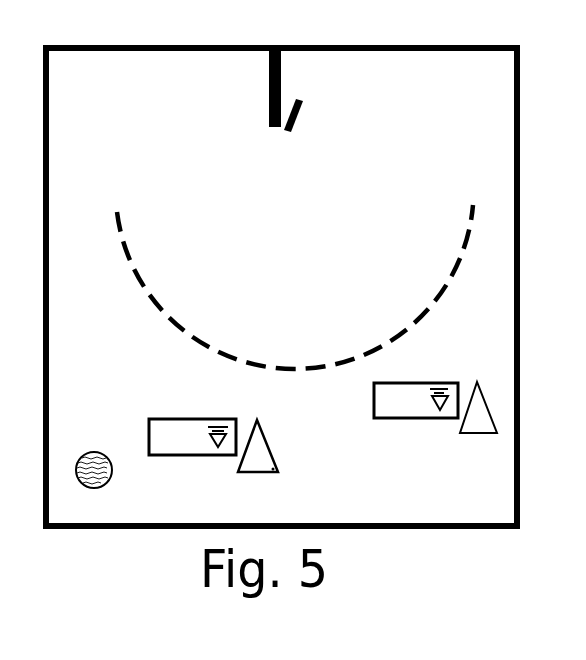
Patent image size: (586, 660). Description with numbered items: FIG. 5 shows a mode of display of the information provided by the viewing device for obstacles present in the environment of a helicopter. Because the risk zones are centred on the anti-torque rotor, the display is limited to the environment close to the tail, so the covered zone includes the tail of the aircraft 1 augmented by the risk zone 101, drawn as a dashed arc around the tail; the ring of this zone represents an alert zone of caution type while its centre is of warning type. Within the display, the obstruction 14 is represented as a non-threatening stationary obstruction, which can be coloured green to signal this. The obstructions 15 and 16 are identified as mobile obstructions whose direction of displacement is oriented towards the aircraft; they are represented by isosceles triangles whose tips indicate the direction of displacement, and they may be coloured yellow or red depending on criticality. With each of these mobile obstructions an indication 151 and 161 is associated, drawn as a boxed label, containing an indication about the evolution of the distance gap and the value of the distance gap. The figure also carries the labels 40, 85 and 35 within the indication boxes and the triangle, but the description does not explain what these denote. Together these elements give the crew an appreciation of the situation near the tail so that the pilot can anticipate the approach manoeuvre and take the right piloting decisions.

The aircraft 1 is at (270, 104).
The risk zone 101 is at (153, 305).
The obstruction 14 is at (85, 468).
The first sensor symbol 40 is at (214, 447).
The indication 151 is at (206, 456).
The first detector 85 is at (258, 447).
The obstruction 15 is at (275, 469).
The indication 161 is at (420, 398).
The second sensor symbol 35 is at (417, 400).
The obstruction 16 is at (482, 452).